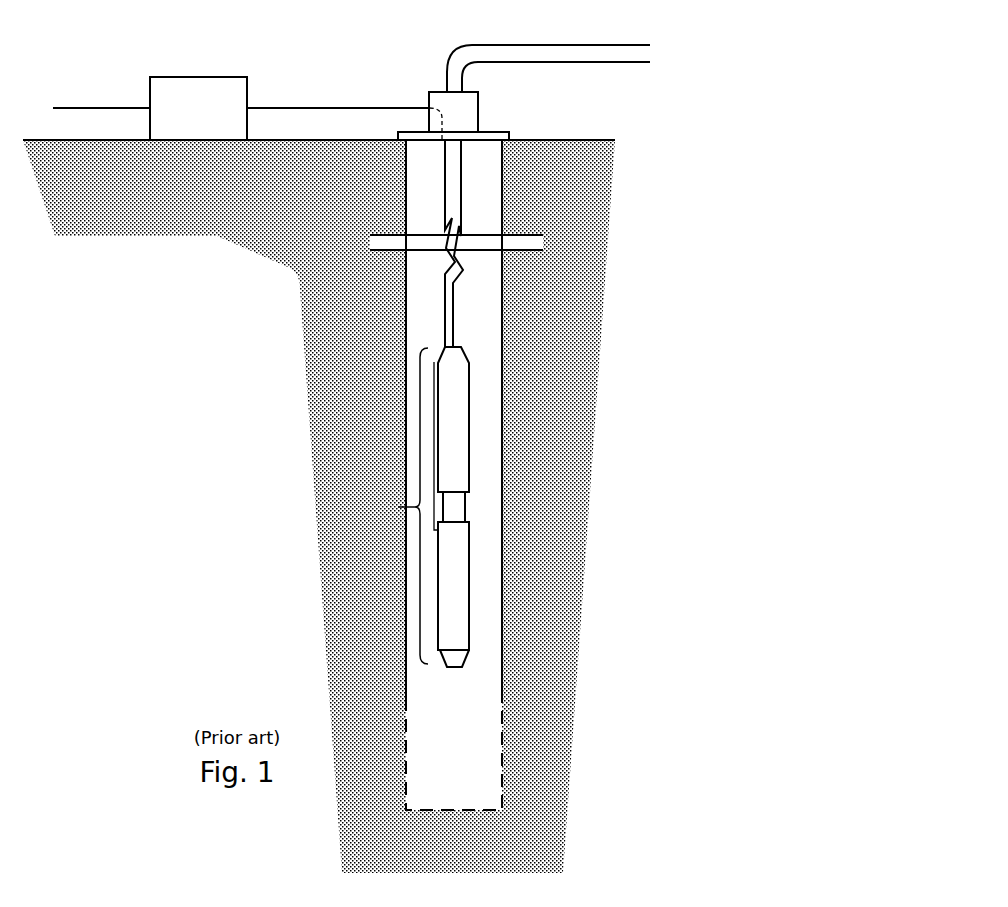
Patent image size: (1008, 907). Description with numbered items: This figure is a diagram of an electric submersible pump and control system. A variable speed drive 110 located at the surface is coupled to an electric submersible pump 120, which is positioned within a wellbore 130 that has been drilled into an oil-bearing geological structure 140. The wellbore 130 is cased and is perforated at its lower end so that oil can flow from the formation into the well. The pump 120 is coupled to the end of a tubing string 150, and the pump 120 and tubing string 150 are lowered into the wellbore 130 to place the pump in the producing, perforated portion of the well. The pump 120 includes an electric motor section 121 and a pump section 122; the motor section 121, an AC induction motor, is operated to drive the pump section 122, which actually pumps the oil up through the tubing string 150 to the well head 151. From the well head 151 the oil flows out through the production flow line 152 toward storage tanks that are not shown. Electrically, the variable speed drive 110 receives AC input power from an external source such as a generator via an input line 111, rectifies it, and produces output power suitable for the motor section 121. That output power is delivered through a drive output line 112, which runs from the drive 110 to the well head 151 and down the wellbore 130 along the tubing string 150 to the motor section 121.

The variable speed drive 110 is at (213, 77).
The input line 111 is at (94, 108).
The drive output line 112 is at (321, 108).
The electric submersible pump 120 is at (415, 506).
The electric motor section 121 is at (470, 645).
The pump section 122 is at (472, 380).
The wellbore 130 is at (502, 455).
The oil-bearing geological structure 140 is at (533, 587).
The tubing string 150 is at (463, 307).
The well head 151 is at (478, 107).
The production flow line 152 is at (456, 57).